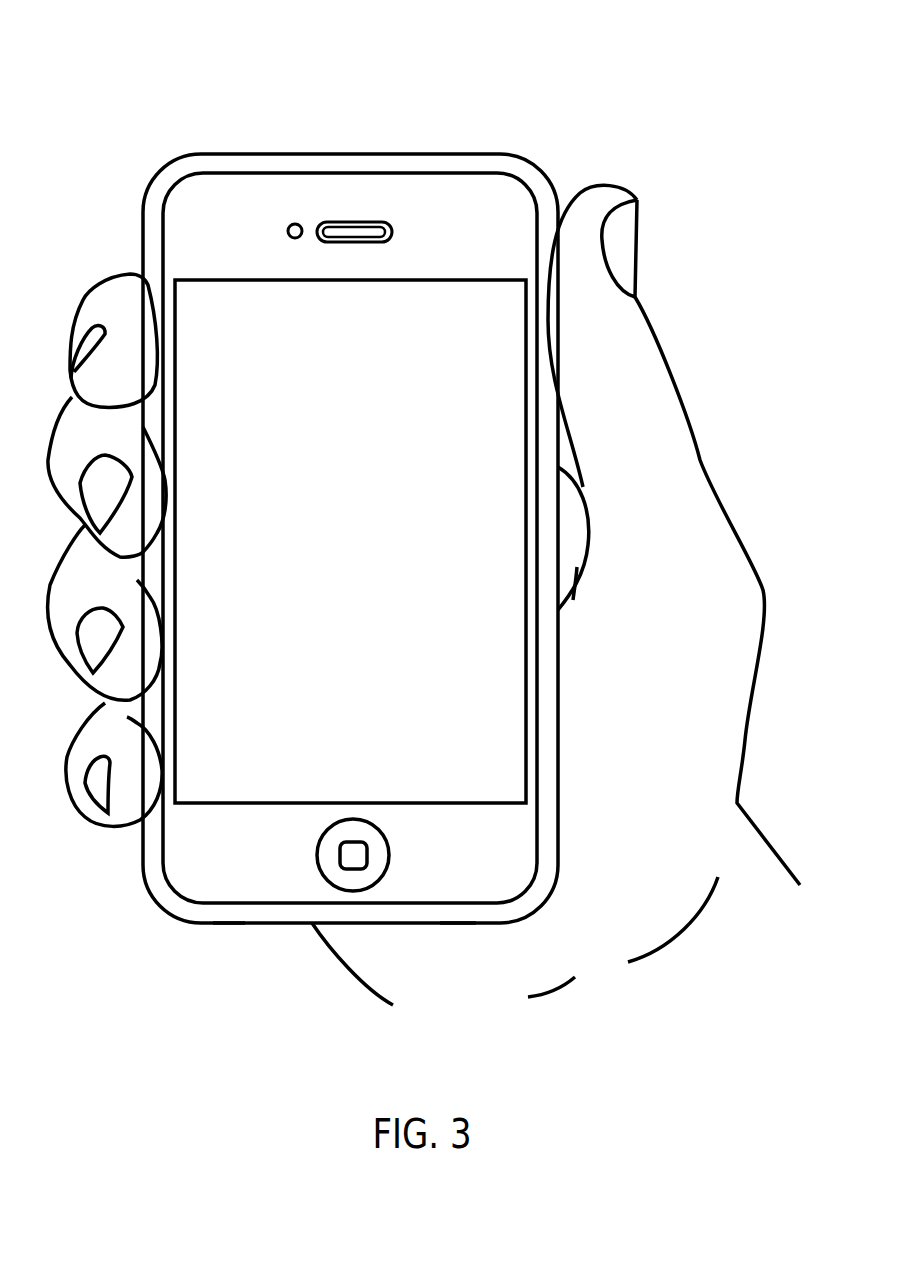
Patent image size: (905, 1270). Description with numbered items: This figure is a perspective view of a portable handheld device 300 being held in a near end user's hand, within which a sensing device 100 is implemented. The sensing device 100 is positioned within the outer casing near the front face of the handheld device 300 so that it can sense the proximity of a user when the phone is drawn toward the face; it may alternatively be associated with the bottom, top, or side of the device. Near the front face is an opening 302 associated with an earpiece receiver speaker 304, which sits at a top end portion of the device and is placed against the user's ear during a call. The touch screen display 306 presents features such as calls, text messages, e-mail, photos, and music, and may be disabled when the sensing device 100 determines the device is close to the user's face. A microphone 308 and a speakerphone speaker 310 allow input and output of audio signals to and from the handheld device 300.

The sensing device 100 is at (289, 227).
The portable handheld device 300 is at (505, 156).
The opening 302 is at (337, 222).
The earpiece receiver speaker 304 is at (355, 230).
The touch screen display 306 is at (435, 313).
The microphone 308 is at (460, 943).
The speakerphone speaker 310 is at (203, 938).